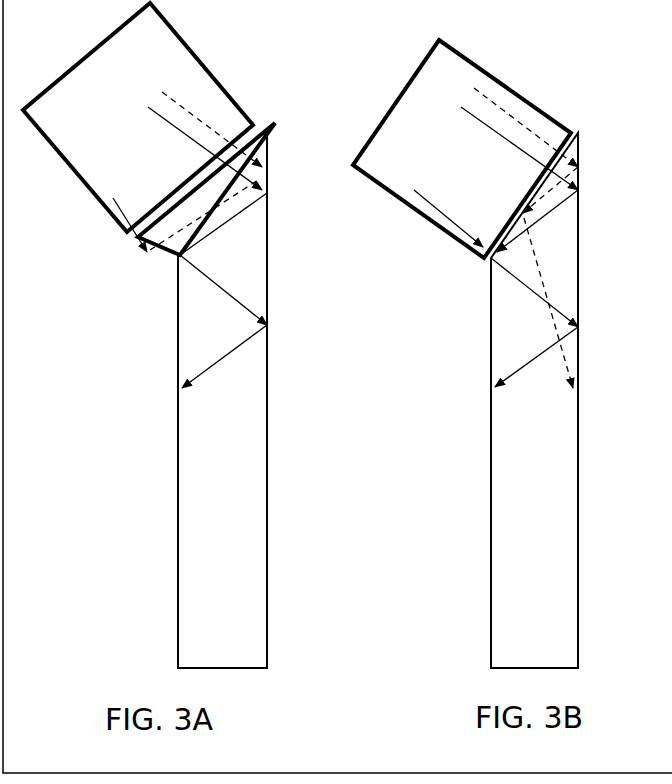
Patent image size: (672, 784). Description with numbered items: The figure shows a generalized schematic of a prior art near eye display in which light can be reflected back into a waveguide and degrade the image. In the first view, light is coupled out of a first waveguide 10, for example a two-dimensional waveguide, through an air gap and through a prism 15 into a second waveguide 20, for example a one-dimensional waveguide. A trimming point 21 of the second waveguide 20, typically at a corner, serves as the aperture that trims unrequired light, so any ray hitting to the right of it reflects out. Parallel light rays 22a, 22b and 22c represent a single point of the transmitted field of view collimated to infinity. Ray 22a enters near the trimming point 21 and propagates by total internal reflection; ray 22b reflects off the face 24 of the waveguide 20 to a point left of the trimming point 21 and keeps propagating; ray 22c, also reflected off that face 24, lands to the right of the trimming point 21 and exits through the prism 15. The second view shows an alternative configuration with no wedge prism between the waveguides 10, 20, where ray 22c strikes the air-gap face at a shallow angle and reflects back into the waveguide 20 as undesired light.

In FIG. 3A, the first waveguide 10 is at (138, 117).
In FIG. 3B, the first waveguide 10 is at (462, 149).
In FIG. 3A, the prism 15 is at (142, 248).
In FIG. 3A, the second waveguide 20 is at (222, 400).
In FIG. 3B, the second waveguide 20 is at (534, 400).
In FIG. 3A, the trimming point 21 is at (171, 268).
In FIG. 3B, the trimming point 21 is at (482, 268).
In FIG. 3A, the light ray 22a is at (122, 212).
In FIG. 3B, the light ray 22a is at (439, 207).
In FIG. 3A, the light ray 22b is at (187, 141).
In FIG. 3B, the light ray 22b is at (501, 141).
In FIG. 3A, the light ray 22c is at (195, 160).
In FIG. 3B, the light ray 22c is at (509, 229).
In FIG. 3A, the reflecting side surface 24 is at (271, 262).
In FIG. 3B, the reflecting side surface 24 is at (584, 262).